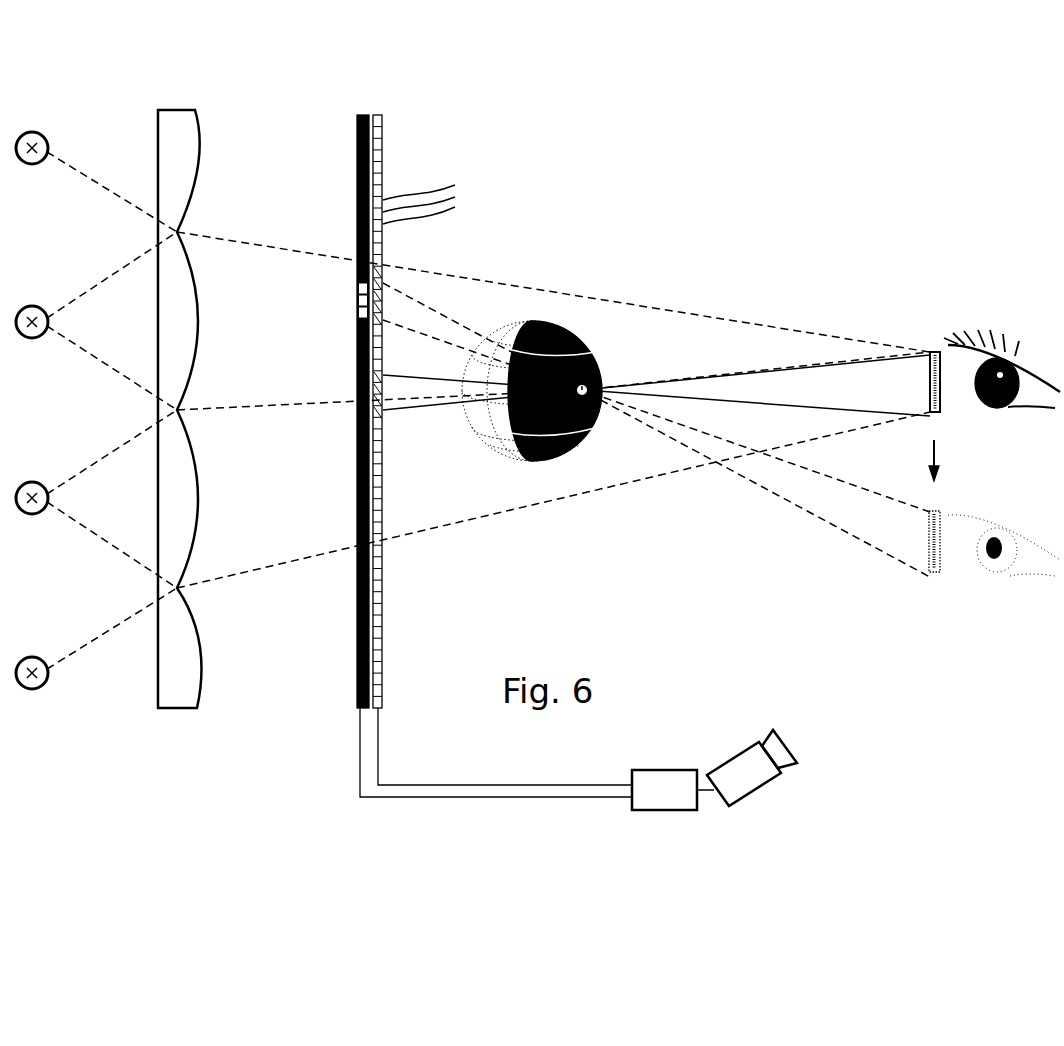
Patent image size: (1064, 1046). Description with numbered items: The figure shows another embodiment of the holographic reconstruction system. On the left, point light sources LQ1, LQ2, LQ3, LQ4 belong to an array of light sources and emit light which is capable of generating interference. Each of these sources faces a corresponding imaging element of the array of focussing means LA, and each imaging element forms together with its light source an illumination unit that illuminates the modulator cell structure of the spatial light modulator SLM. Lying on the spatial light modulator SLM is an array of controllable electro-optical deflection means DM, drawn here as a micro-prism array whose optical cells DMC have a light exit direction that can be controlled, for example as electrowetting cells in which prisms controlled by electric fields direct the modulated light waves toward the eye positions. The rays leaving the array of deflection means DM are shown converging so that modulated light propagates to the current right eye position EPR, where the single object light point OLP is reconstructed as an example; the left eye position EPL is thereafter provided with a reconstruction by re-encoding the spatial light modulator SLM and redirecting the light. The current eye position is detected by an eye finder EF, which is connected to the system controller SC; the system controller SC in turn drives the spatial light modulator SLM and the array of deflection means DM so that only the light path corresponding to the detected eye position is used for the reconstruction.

The point light source LQ1 is at (70, 148).
The point light source LQ2 is at (70, 322).
The point light source LQ3 is at (70, 498).
The light source 4 LQ4 is at (70, 673).
The array of focussing means LA is at (180, 397).
The spatial light modulator SLM is at (363, 110).
The array of controllable electro-optical deflection means DM is at (380, 110).
The optical cells DMC is at (439, 204).
The object light point OLP is at (600, 367).
The right eye position EPR is at (995, 382).
The left eye position EPL is at (994, 557).
The system controller SC is at (664, 790).
The eye finder EF is at (752, 768).